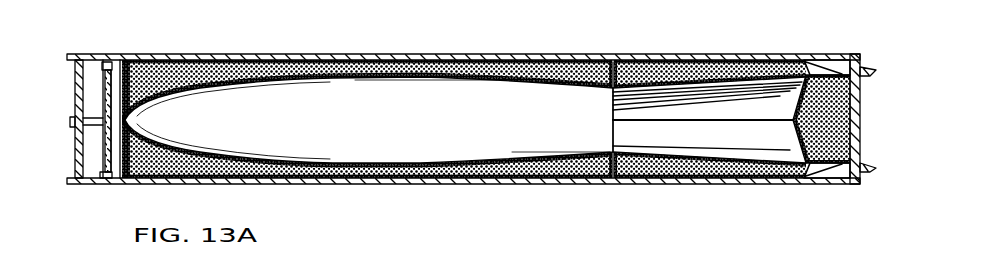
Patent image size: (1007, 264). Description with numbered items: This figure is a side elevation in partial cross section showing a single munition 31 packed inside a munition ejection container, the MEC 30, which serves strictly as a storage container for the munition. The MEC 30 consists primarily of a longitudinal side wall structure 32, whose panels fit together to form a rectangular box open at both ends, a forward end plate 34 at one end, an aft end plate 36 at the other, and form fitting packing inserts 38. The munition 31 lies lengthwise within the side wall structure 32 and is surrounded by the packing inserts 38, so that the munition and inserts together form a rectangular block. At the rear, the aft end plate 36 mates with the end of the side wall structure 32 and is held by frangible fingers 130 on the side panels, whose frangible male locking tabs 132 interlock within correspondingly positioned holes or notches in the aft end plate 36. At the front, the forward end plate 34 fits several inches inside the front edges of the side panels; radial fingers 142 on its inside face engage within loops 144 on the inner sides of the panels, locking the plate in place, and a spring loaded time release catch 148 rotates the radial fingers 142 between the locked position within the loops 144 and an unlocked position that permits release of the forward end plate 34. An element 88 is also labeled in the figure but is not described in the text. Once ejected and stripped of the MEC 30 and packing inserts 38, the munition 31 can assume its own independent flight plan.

The MEC 30 is at (368, 52).
The munition 31 is at (455, 97).
The longitudinal side wall structure 32 is at (548, 58).
The forward end plate 34 is at (88, 118).
The aft end plate 36 is at (862, 131).
The packing inserts 38 is at (168, 64).
The end tab 88 is at (72, 116).
The frangible fingers 130 is at (832, 66).
The frangible male locking tabs 132 is at (864, 73).
The radial fingers 142 is at (82, 160).
The loops 144 is at (110, 62).
The time release catch 148 is at (100, 140).